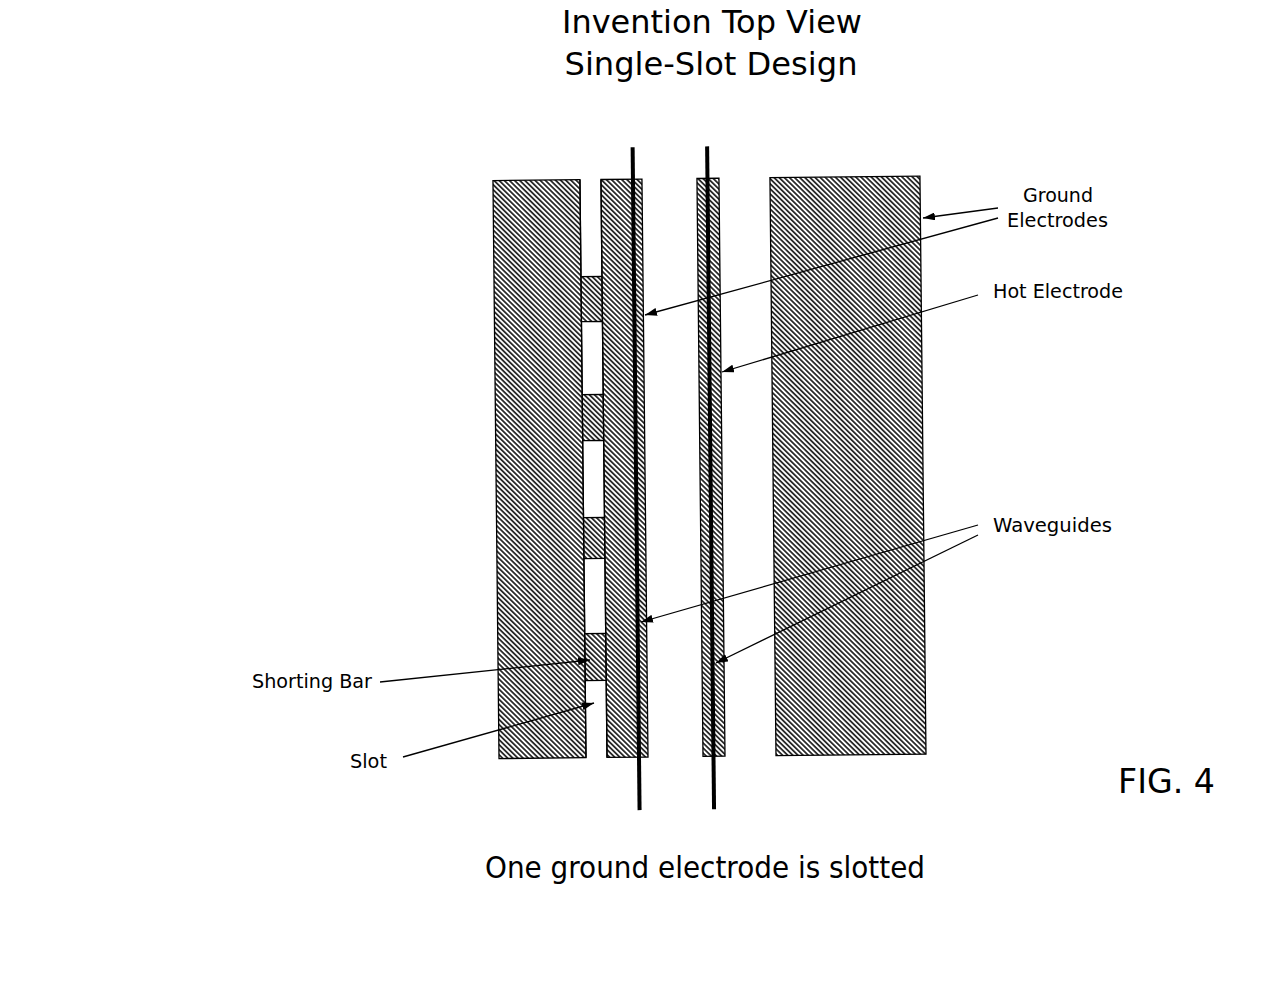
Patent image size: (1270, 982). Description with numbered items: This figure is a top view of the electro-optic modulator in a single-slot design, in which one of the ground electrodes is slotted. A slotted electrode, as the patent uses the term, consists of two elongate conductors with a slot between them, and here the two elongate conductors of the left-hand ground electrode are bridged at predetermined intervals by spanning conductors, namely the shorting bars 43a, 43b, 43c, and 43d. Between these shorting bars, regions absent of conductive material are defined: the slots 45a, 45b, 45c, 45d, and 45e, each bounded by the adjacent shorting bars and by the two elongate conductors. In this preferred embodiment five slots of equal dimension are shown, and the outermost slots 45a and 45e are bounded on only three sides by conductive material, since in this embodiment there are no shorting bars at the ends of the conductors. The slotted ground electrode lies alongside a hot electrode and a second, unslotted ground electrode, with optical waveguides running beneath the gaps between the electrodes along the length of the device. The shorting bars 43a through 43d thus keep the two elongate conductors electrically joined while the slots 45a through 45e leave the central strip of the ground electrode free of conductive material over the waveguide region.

The shorting bar 43a is at (636, 281).
The shorting bar 43b is at (636, 406).
The shorting bar 43c is at (637, 512).
The shorting bar 43d is at (639, 628).
The slot 45a is at (589, 213).
The slot 45b is at (636, 357).
The slot 45c is at (637, 469).
The slot 45d is at (637, 575).
The slot 45e is at (639, 718).